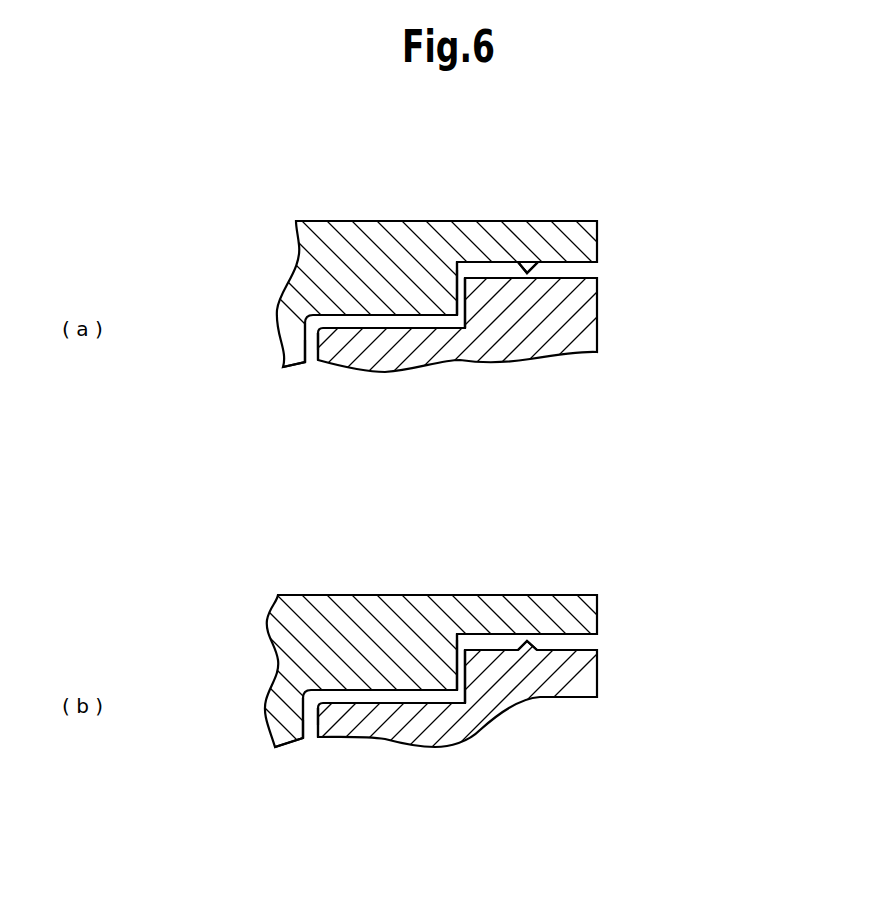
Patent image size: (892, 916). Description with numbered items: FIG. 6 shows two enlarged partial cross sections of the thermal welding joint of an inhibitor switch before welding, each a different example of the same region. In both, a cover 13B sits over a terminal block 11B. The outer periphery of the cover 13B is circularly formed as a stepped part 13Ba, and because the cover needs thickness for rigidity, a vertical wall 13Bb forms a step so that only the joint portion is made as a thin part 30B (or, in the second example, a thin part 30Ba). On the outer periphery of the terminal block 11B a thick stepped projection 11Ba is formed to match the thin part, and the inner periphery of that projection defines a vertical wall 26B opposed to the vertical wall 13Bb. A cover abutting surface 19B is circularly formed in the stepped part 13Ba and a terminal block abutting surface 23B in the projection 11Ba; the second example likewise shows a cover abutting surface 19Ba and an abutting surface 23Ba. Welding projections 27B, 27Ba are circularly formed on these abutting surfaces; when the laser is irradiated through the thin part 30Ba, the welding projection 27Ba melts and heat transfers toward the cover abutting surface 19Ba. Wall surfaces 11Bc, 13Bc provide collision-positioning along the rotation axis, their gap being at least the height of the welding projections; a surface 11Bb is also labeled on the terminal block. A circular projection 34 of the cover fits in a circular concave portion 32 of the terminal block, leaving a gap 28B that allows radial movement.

The cover 13B is at (350, 221).
The terminal block 11B is at (388, 372).
The stepped part 13Ba is at (560, 227).
The vertical wall 13Bb is at (461, 264).
The wall surface 13Bc is at (372, 318).
The stepped projection 11Ba is at (573, 303).
The step side surface of lower member 11Bb is at (462, 318).
The wall surface 11Bc is at (410, 320).
The cover abutting surface 19B is at (597, 259).
The cover abutting surface 19Ba is at (572, 640).
The terminal block abutting surface 23B is at (560, 263).
The gap between upper and lower members 23Ba is at (556, 634).
The vertical wall 26B is at (460, 313).
The welding projection 27B is at (504, 262).
The welding projection 27Ba is at (528, 640).
The gap 28B is at (313, 362).
The thin part 30B is at (525, 256).
The thin part 30Ba is at (525, 618).
The circular concave portion 32 is at (317, 342).
The circular projection 34 is at (297, 347).